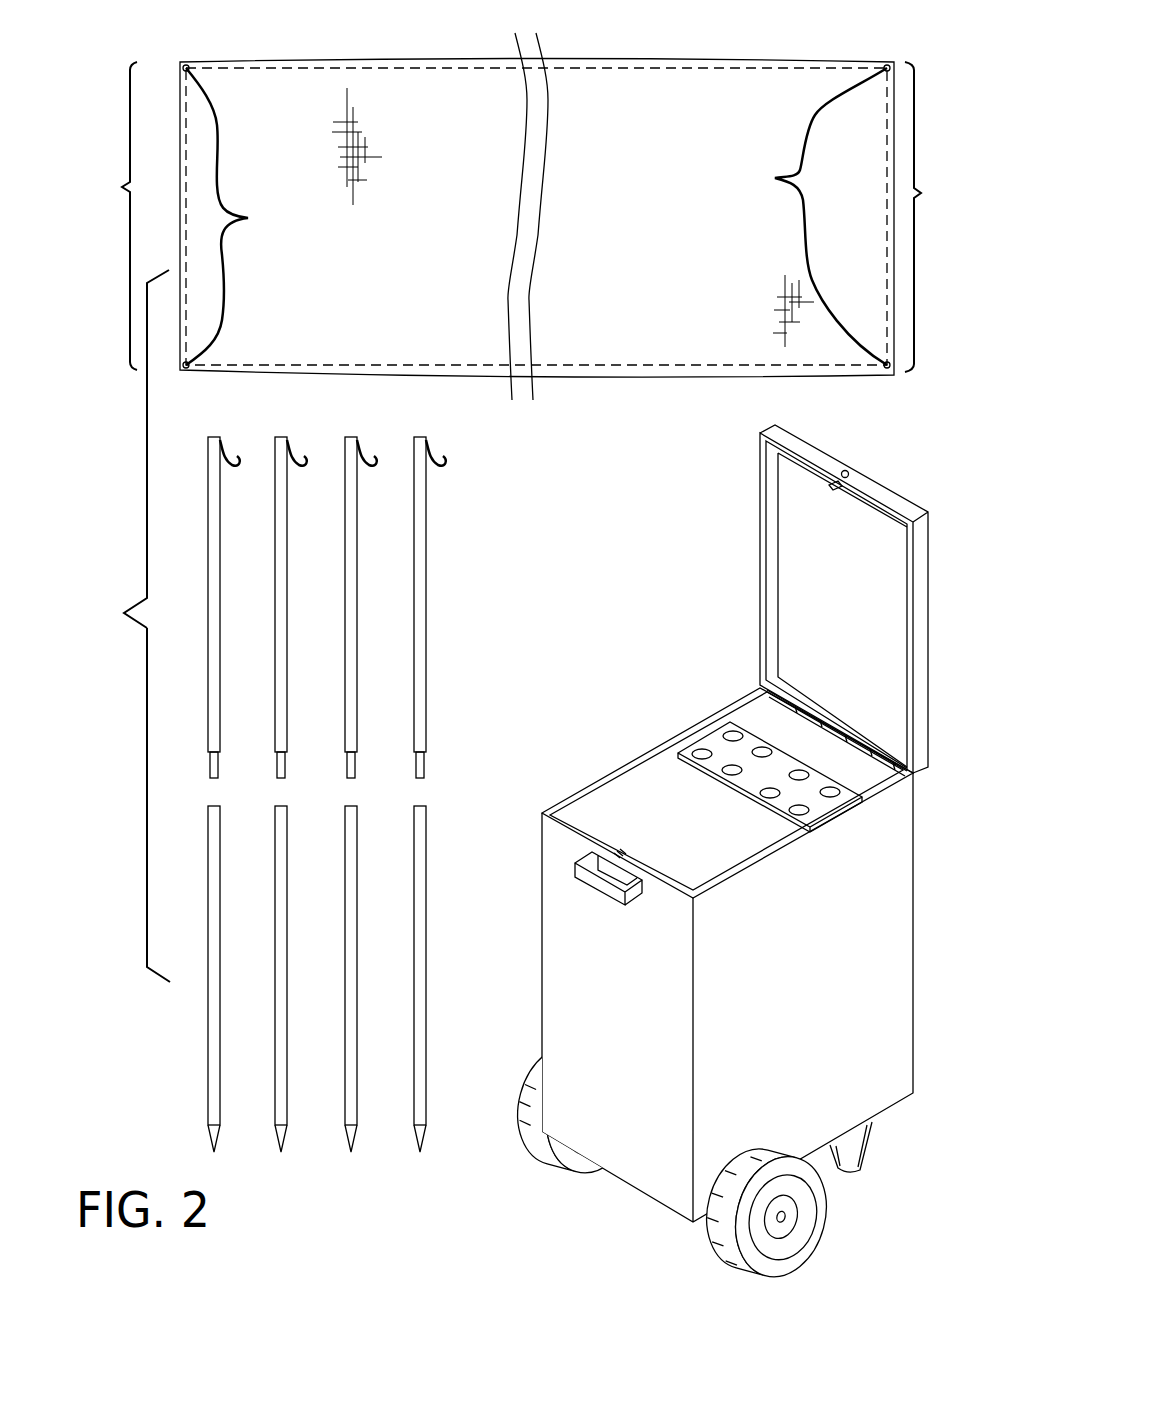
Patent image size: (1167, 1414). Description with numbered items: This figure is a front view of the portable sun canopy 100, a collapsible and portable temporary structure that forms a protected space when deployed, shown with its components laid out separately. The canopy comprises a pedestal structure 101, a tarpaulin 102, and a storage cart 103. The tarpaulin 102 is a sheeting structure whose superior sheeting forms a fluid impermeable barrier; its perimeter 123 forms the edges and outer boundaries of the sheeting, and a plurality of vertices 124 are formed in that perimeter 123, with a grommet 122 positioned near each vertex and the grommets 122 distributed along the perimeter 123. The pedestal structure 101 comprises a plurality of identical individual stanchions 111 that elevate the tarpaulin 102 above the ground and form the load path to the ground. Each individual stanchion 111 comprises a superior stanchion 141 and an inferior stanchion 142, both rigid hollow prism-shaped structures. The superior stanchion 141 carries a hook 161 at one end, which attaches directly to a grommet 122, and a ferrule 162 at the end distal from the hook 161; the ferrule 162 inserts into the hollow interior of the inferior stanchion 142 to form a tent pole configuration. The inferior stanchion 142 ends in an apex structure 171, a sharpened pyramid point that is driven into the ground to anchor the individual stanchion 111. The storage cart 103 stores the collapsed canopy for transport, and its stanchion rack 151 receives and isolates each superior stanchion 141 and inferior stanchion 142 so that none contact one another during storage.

The portable sun canopy 100 is at (122, 118).
The pedestal structure 101 is at (442, 512).
The tarpaulin 102 is at (290, 60).
The storage cart 103 is at (921, 1050).
The individual stanchion 111 is at (450, 1163).
The grommet 122 is at (536, 216).
The perimeter 123 is at (401, 62).
The vertex 124 is at (522, 217).
The superior stanchion 141 is at (185, 532).
The inferior stanchion 142 is at (208, 848).
The stanchion rack 151 is at (830, 807).
The hook 161 is at (227, 452).
The ferrule 162 is at (220, 772).
The apex structure 171 is at (210, 1139).